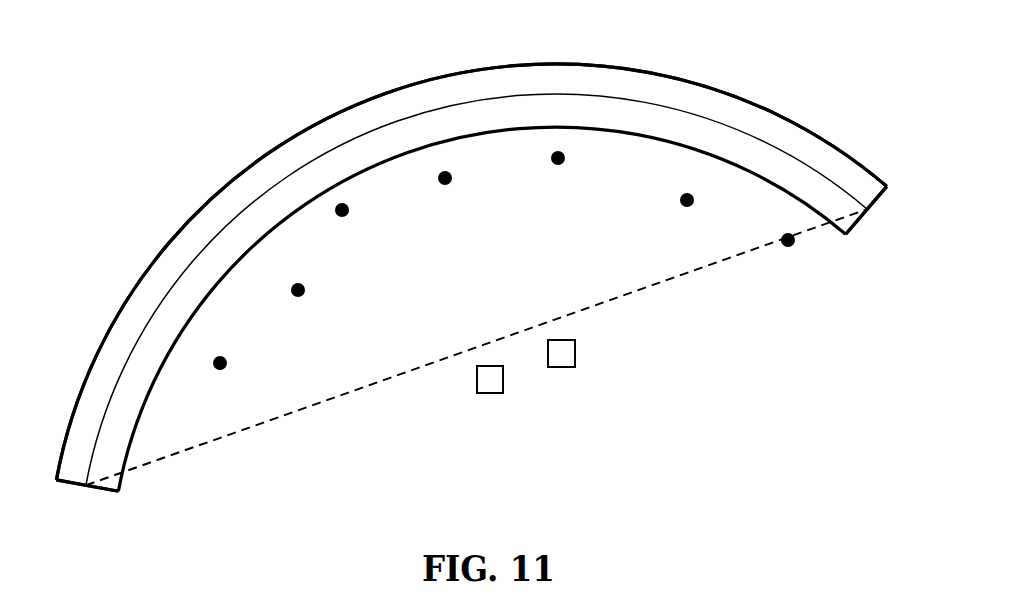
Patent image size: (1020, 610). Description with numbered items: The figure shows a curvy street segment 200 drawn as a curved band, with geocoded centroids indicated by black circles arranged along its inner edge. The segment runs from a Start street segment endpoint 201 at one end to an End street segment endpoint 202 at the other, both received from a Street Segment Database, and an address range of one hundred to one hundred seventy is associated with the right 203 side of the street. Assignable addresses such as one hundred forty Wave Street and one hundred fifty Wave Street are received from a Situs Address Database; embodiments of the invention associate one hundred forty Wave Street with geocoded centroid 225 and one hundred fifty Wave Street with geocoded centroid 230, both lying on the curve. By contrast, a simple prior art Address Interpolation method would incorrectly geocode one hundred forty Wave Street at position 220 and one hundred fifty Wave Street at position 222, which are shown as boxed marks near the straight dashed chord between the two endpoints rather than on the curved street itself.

The curvy street segment 200 is at (584, 91).
The Start street segment endpoint 201 is at (864, 210).
The End street segment endpoint 202 is at (86, 486).
The right side of the street 203 is at (778, 112).
The position 220 is at (562, 368).
The position 222 is at (490, 394).
The geocoded centroid 225 is at (449, 184).
The geocoded centroid 230 is at (346, 215).